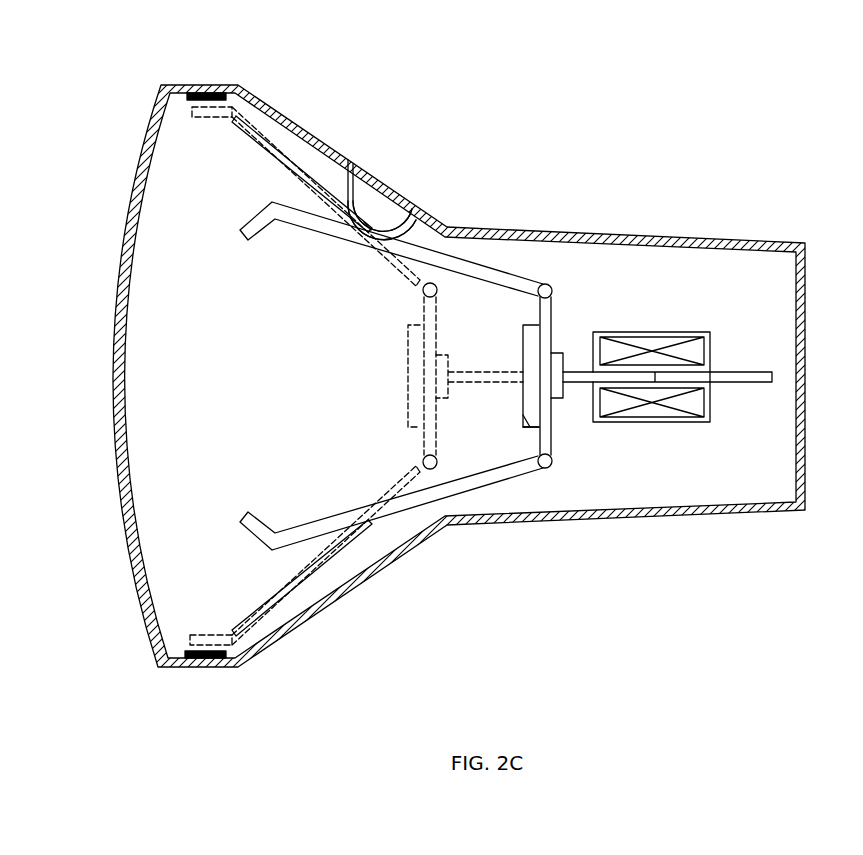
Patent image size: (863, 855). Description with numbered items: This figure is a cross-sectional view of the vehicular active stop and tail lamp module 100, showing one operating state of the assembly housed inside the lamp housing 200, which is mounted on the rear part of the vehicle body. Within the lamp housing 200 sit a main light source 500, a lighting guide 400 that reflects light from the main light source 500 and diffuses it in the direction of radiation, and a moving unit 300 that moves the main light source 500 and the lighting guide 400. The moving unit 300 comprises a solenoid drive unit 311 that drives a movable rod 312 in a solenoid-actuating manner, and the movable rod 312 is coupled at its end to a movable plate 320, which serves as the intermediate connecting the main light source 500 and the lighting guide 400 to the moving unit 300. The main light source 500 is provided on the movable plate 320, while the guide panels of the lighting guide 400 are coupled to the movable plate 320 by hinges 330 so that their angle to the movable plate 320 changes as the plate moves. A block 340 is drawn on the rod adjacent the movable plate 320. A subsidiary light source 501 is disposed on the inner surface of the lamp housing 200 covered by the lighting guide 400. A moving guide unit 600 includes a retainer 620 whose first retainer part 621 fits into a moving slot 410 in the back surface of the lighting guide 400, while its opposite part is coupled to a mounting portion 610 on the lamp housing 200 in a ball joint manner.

The vehicular active stop and tail lamp module 100 is at (117, 124).
The lamp housing 200 is at (700, 240).
The moving unit 300 is at (701, 393).
The solenoid drive unit 311 is at (672, 422).
The movable rod 312 is at (762, 375).
The movable plate 320 is at (556, 438).
The hinge 330 is at (547, 286).
The block 340 is at (556, 347).
The lighting guide 400 is at (487, 272).
The moving slot 410 is at (243, 122).
The main light source 500 is at (527, 424).
The subsidiary light source 501 is at (201, 93).
The moving guide unit 600 is at (360, 198).
The mounting portion 610 is at (385, 203).
The retainer 620 is at (430, 222).
The first retainer part 621 is at (367, 230).